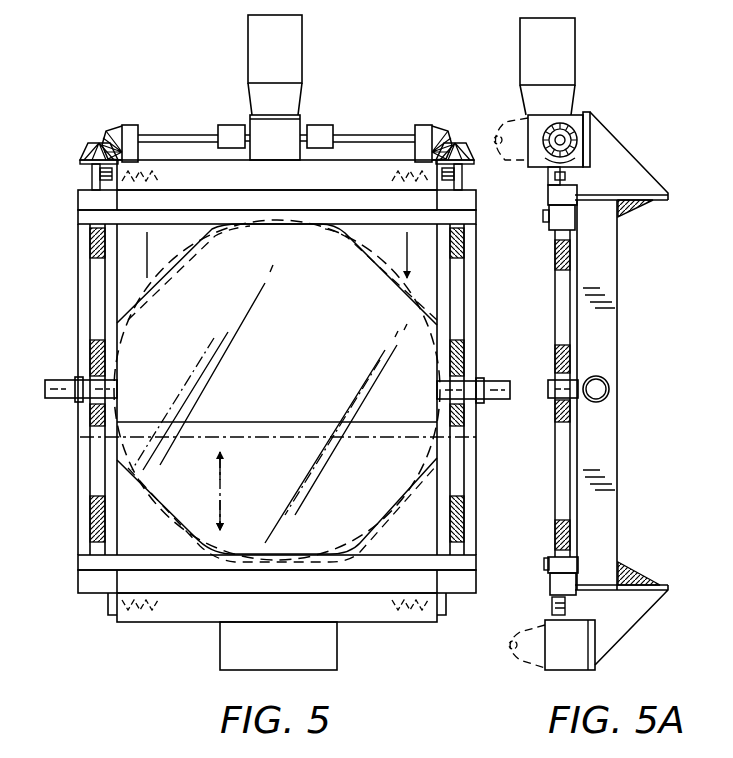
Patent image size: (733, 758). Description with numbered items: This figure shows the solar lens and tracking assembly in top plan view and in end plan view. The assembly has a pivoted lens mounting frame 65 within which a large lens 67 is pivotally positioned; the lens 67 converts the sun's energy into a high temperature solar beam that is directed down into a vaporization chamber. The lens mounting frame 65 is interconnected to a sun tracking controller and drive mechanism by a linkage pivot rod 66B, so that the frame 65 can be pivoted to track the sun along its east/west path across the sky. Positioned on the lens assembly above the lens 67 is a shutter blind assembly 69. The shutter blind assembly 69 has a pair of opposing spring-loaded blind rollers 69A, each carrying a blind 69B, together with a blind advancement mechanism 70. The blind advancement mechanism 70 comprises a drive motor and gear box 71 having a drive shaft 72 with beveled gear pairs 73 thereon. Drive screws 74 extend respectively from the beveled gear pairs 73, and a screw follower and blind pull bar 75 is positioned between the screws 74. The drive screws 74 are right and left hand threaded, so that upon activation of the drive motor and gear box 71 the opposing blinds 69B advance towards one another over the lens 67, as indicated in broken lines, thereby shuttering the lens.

In FIG. 5, the lens mounting frame 65 is at (112, 485).
In FIG. 5A, the lens mounting frame 65 is at (598, 458).
In FIG. 5, the linkage pivot rod 66B is at (62, 396).
In FIG. 5A, the linkage pivot rod 66B is at (598, 386).
In FIG. 5, the large lens 67 is at (277, 390).
In FIG. 5, the shutter blind assembly 69 is at (368, 158).
In FIG. 5, the spring-loaded blind roller 69A is at (255, 197).
In FIG. 5, the blind 69B is at (248, 583).
In FIG. 5, the blind advancement mechanism 70 is at (320, 108).
In FIG. 5, the drive motor and gear box 71 is at (283, 62).
In FIG. 5A, the drive motor and gear box 71 is at (562, 73).
In FIG. 5, the drive shaft 72 is at (215, 138).
In FIG. 5, the beveled gear pair 73 is at (118, 130).
In FIG. 5A, the beveled gear pair 73 is at (578, 145).
In FIG. 5, the drive screw 74 is at (95, 290).
In FIG. 5A, the drive screw 74 is at (562, 303).
In FIG. 5, the screw follower and blind pull bar 75 is at (377, 213).
In FIG. 5A, the screw follower and blind pull bar 75 is at (556, 218).